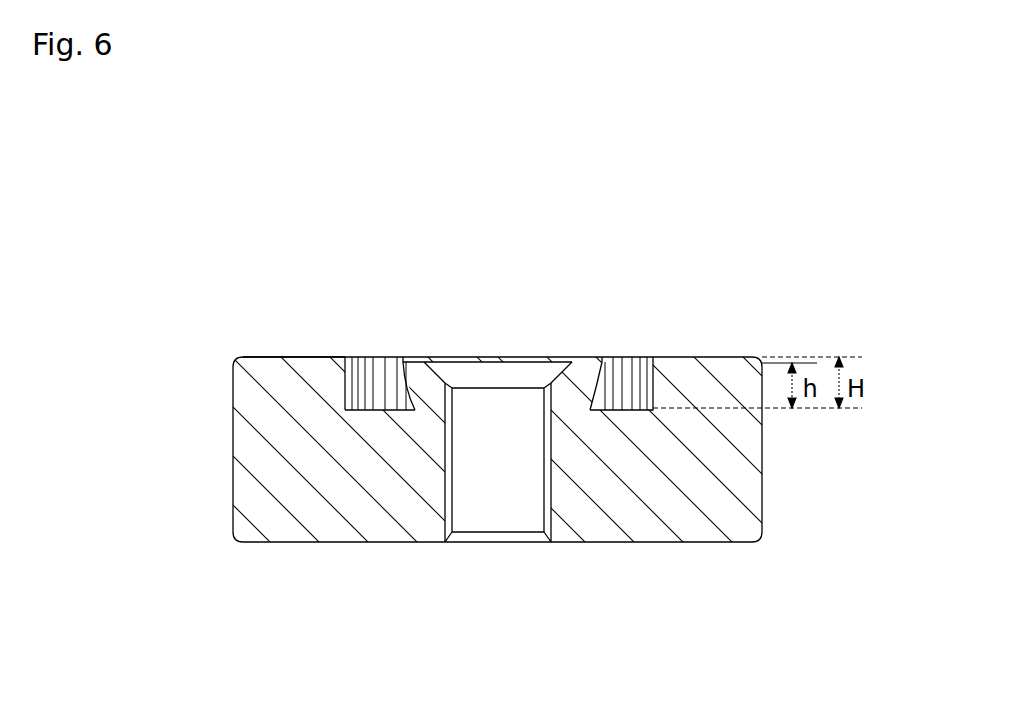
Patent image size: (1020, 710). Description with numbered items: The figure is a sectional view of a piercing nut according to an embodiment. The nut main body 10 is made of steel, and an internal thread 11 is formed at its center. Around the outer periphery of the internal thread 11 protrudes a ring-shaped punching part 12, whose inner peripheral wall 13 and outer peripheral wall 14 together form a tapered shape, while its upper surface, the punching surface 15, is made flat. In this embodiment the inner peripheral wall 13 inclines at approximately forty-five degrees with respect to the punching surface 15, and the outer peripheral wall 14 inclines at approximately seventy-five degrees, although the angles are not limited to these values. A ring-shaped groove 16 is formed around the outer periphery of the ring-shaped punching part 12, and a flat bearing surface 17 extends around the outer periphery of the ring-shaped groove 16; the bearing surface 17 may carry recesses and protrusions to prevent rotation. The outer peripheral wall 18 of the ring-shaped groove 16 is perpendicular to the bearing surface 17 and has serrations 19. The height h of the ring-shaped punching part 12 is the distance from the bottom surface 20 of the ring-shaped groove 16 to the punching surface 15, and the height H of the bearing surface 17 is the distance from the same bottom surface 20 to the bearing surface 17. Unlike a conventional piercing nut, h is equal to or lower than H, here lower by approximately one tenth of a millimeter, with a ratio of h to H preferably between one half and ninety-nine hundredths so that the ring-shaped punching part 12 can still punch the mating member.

The nut main body 10 is at (762, 481).
The internal thread 11 is at (450, 430).
The ring-shaped punching part 12 is at (603, 372).
The inner peripheral wall 13 is at (556, 364).
The outer peripheral wall 14 is at (632, 368).
The punching surface 15 is at (600, 383).
The ring-shaped groove 16 is at (383, 367).
The bearing surface 17 is at (283, 357).
The outer peripheral wall of the ring-shaped groove 18 is at (350, 357).
The serrations 19 is at (388, 392).
The bottom surface of the ring-shaped groove 20 is at (357, 410).